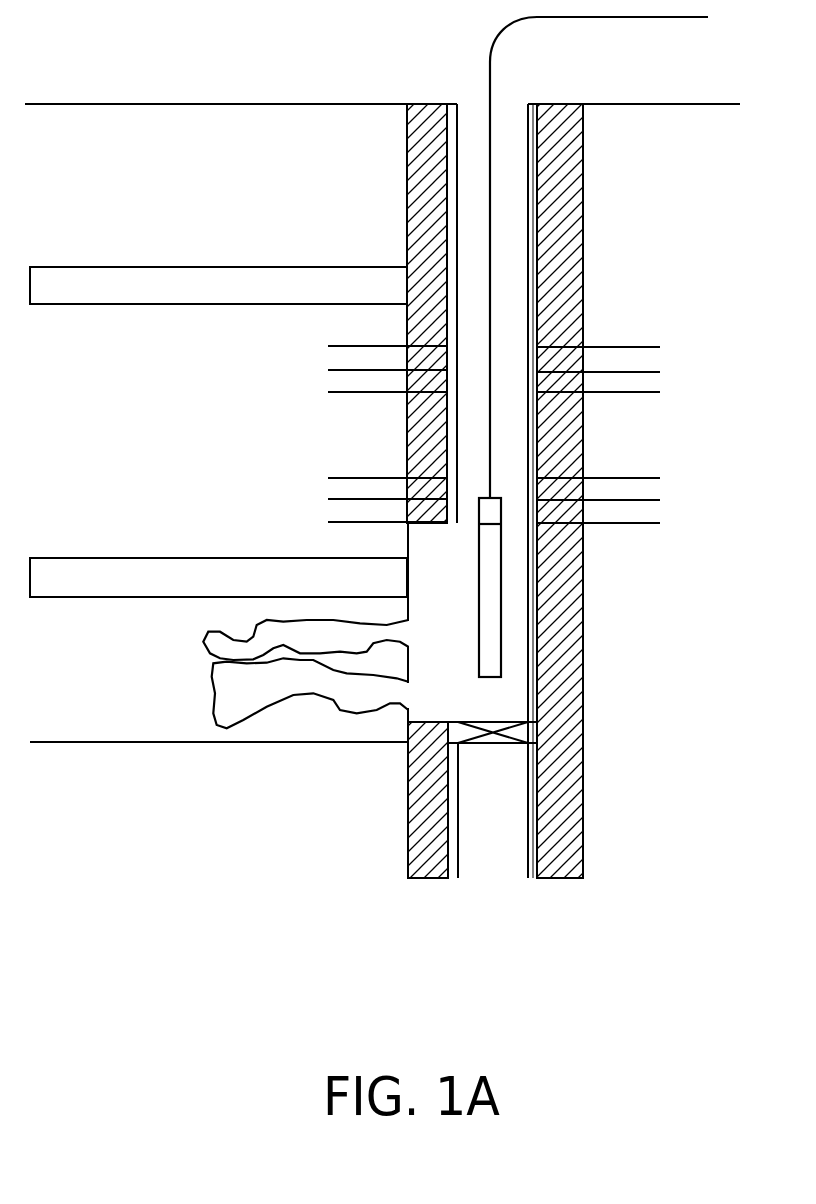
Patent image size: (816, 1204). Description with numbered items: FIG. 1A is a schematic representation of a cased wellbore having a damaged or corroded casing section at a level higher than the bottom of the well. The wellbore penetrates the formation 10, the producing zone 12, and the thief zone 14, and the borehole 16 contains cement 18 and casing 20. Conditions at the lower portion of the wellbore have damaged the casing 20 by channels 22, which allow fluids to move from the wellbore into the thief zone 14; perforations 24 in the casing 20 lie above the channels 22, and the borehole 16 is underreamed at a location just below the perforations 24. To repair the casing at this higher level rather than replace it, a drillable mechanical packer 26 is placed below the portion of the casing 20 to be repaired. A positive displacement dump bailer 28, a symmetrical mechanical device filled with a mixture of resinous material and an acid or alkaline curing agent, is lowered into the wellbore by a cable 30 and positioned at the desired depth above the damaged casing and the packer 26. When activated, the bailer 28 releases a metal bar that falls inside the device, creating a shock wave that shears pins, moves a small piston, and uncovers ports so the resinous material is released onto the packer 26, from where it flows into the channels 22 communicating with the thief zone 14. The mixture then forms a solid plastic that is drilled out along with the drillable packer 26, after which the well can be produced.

The formation 10 is at (149, 196).
The producing zone 12 is at (149, 436).
The thief zone 14 is at (149, 678).
The borehole 16 is at (582, 148).
The cement 18 is at (430, 103).
The casing 20 is at (533, 655).
The channels 22 is at (418, 710).
The perforations 24 is at (347, 346).
The drillable mechanical packer 26 is at (472, 745).
The positive displacement dump bailer 28 is at (501, 593).
The cable 30 is at (490, 262).